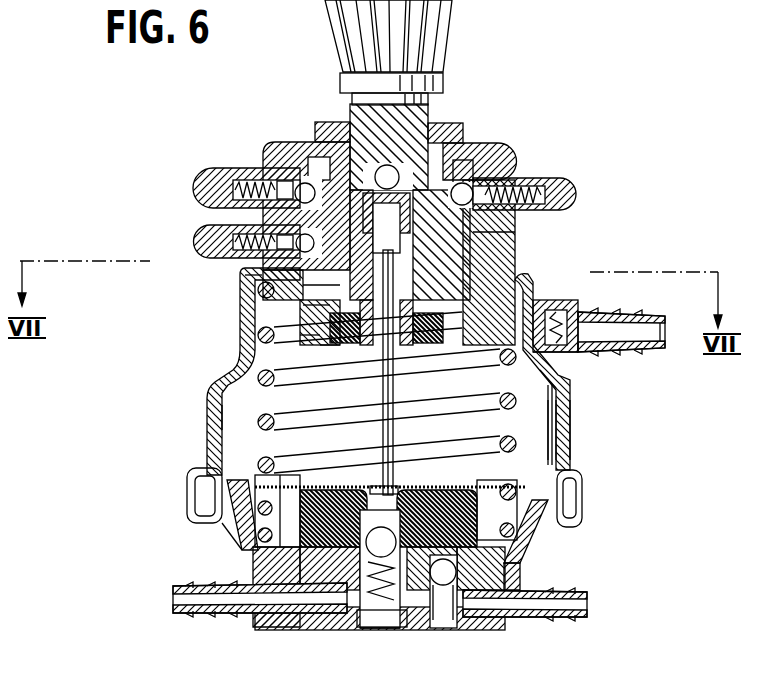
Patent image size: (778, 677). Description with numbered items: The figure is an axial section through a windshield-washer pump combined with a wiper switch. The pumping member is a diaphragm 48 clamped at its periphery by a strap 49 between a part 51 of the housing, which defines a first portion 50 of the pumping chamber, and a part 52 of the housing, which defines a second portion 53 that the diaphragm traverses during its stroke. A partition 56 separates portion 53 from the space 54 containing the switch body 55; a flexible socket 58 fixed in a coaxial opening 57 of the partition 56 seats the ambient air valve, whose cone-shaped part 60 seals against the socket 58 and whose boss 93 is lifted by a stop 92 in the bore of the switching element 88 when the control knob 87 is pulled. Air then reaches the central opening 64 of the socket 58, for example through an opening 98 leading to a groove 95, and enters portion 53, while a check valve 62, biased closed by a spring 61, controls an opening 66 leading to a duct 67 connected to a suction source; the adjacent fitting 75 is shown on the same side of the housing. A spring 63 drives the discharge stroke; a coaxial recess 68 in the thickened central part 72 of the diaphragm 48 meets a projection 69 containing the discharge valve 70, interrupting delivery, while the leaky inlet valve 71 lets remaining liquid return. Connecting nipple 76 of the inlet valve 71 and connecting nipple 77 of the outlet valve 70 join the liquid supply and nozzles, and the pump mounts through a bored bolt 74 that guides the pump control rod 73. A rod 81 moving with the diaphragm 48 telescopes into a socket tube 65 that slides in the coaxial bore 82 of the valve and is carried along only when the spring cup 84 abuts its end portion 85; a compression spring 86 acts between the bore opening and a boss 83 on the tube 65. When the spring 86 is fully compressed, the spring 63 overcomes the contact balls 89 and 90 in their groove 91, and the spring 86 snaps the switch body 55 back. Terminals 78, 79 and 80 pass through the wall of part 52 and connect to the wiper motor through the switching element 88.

The diaphragm 48 is at (538, 522).
The strap 49 is at (585, 500).
The first portion of the pumping chamber 50 is at (245, 518).
The part of the pump housing 51 is at (525, 560).
The part of the pump housing 52 is at (562, 428).
The second portion of the pumping chamber 53 is at (558, 455).
The space 54 is at (300, 318).
The switch body 55 is at (500, 272).
The partition 56 is at (330, 347).
The coaxial opening 57 is at (368, 332).
The socket 58 is at (345, 340).
The cone-shaped part of the valve 60 is at (300, 336).
The spring 61 is at (580, 350).
The check valve 62 is at (564, 316).
The spring 63 is at (252, 466).
The central opening of the socket 64 is at (392, 322).
The socket tube 65 is at (550, 380).
The opening 66 is at (532, 327).
The duct 67 is at (662, 340).
The coaxial recess 68 is at (432, 496).
The coaxial projection 69 is at (364, 486).
The discharge valve 70 is at (428, 628).
The inlet valve 71 is at (478, 622).
The central part of the diaphragm 72 is at (335, 582).
The pump control rod 73 is at (436, 104).
The bored bolt 74 is at (322, 124).
The outlet port 75 is at (630, 320).
The connecting nipple 76 is at (562, 618).
The connecting nipple 77 is at (180, 610).
The terminal 78 is at (582, 193).
The terminal 79 is at (195, 187).
The terminal 80 is at (198, 240).
The rod 81 is at (400, 432).
The coaxial bore of the valve 82 is at (374, 213).
The boss 83 is at (391, 361).
The spring cup 84 is at (560, 440).
The end portion of the tube 85 is at (240, 415).
The compression spring 86 is at (340, 290).
The control knob 87 is at (430, 19).
The switching element 88 is at (492, 250).
The contact ball 89 is at (514, 170).
The contact ball 90 is at (285, 172).
The groove 91 is at (518, 230).
The stop 92 is at (330, 305).
The boss of the valve 93 is at (258, 276).
The groove 95 is at (350, 619).
The opening 98 is at (440, 652).